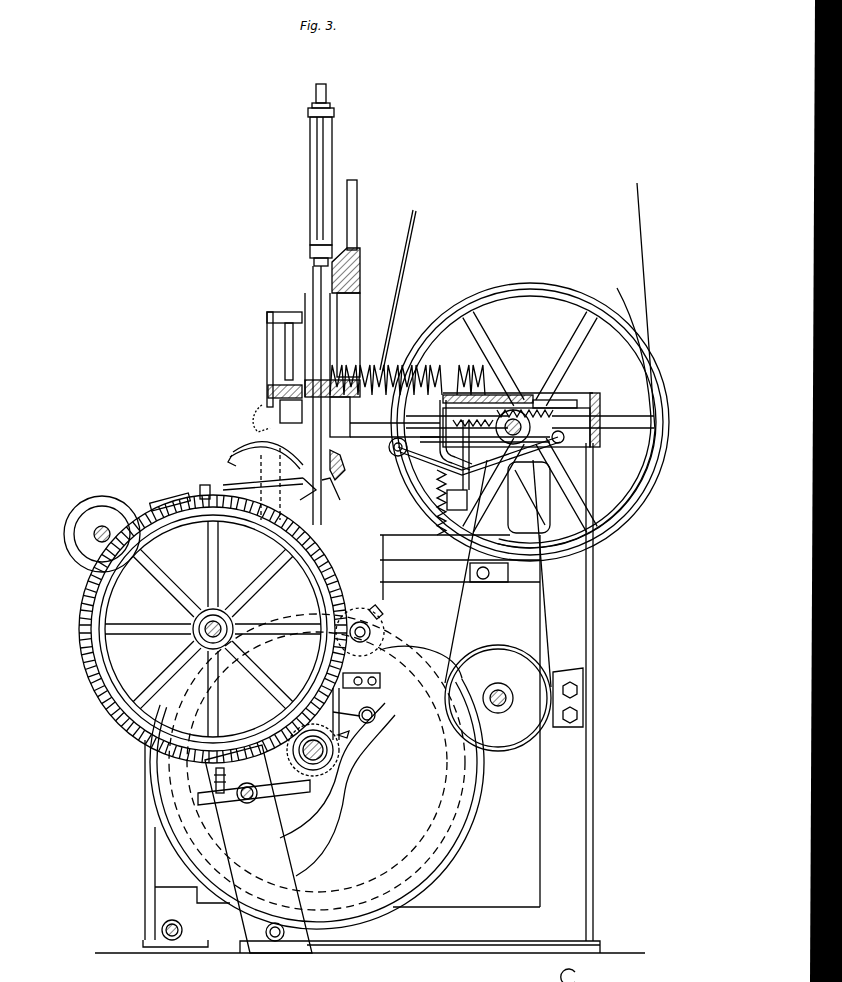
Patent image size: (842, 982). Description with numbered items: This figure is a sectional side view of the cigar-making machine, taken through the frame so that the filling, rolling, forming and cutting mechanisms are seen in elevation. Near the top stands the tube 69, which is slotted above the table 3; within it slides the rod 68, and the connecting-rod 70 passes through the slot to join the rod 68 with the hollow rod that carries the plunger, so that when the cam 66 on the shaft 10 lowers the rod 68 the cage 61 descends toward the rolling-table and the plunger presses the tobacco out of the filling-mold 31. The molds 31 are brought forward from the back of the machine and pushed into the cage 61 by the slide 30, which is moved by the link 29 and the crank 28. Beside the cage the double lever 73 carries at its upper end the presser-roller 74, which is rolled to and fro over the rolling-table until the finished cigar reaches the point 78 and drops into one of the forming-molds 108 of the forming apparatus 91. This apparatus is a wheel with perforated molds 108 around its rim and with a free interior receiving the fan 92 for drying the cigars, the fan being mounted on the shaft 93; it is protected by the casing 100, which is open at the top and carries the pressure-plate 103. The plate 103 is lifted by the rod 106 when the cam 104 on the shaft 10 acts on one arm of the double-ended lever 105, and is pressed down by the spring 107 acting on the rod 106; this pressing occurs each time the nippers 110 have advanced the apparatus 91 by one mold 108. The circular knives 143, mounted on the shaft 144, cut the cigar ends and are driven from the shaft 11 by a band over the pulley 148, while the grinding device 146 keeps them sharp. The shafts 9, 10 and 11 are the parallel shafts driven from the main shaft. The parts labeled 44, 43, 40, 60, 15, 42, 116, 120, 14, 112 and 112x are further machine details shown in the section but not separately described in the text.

The rod 68 is at (326, 92).
The tube 69 is at (332, 153).
The connecting-rod 70 is at (310, 252).
The cage 61 is at (327, 395).
The bracket 44 is at (267, 390).
The pawl 43 is at (260, 424).
The filling-mold 31 is at (420, 368).
The table 3 is at (500, 395).
The slide 30 is at (570, 393).
The spring 40 is at (552, 414).
The eccentric 60 is at (513, 427).
The pivot 15 is at (398, 456).
The link 29 is at (490, 462).
The crank 28 is at (420, 470).
The cover 42 is at (282, 460).
The point of the rolling-table 78 is at (228, 466).
The nippers 110 is at (269, 486).
The pin 116 is at (200, 488).
The pressure-plate 103 is at (165, 495).
The presser-roller 74 is at (345, 466).
The double lever 73 is at (340, 500).
The casing 100 is at (92, 590).
The fan 92 is at (218, 553).
The forming apparatus 91 is at (200, 540).
The forming-molds 108 is at (188, 522).
The shaft 93 is at (280, 522).
The pulley 148 is at (64, 533).
The shaft 11 is at (94, 533).
The cam 66 is at (478, 790).
The shaft 9 is at (506, 698).
The circular knives 143 is at (384, 632).
The grinding device 146 is at (380, 610).
The shaft 144 is at (375, 656).
The rod 120 is at (348, 713).
The roller 14 is at (352, 712).
The shaft 10 is at (313, 750).
The stop 112x is at (340, 745).
The stop 112 is at (290, 752).
The cam 104 is at (295, 765).
The rod 106 is at (198, 798).
The double-ended lever 105 is at (257, 800).
The spring 107 is at (230, 775).